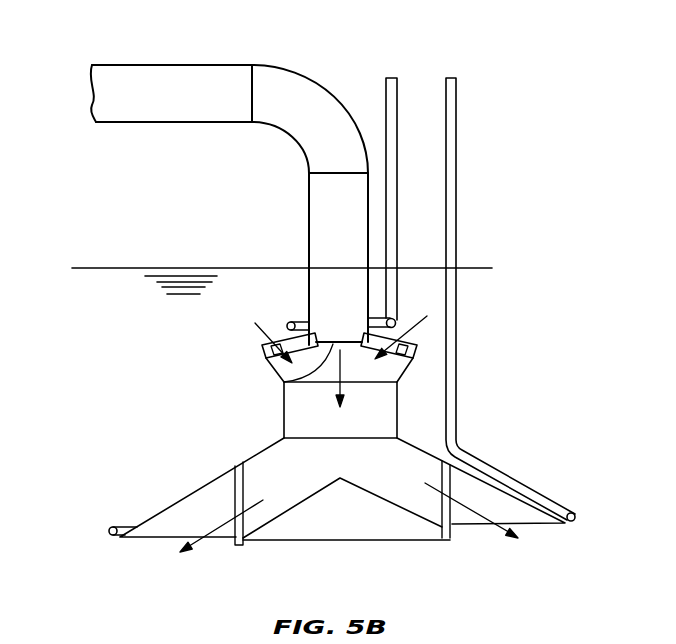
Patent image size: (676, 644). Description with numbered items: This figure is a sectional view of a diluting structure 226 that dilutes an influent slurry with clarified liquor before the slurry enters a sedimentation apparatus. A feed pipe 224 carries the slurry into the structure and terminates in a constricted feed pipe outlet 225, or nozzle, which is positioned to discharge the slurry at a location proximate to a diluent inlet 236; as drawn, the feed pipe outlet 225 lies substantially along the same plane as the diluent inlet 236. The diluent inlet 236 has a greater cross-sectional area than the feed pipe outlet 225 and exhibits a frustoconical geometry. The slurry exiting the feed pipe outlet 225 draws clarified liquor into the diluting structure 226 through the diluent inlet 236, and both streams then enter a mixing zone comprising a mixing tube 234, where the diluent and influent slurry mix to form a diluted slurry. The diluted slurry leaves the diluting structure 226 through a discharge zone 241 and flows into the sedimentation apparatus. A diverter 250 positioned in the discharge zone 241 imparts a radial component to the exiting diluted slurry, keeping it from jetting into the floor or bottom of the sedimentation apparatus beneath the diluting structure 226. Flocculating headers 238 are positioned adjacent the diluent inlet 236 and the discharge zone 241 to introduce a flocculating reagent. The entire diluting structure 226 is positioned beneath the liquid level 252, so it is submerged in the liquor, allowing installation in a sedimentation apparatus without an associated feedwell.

The feed pipe 224 is at (293, 64).
The liquid level 252 is at (133, 268).
The flocculating headers 238 is at (296, 322).
The diluent inlet 236 is at (423, 324).
The feed pipe outlet 225 is at (285, 382).
The mixing tube 234 is at (399, 406).
The diluting structure 226 is at (202, 368).
The discharge zone 241 is at (156, 554).
The diverter 250 is at (280, 543).